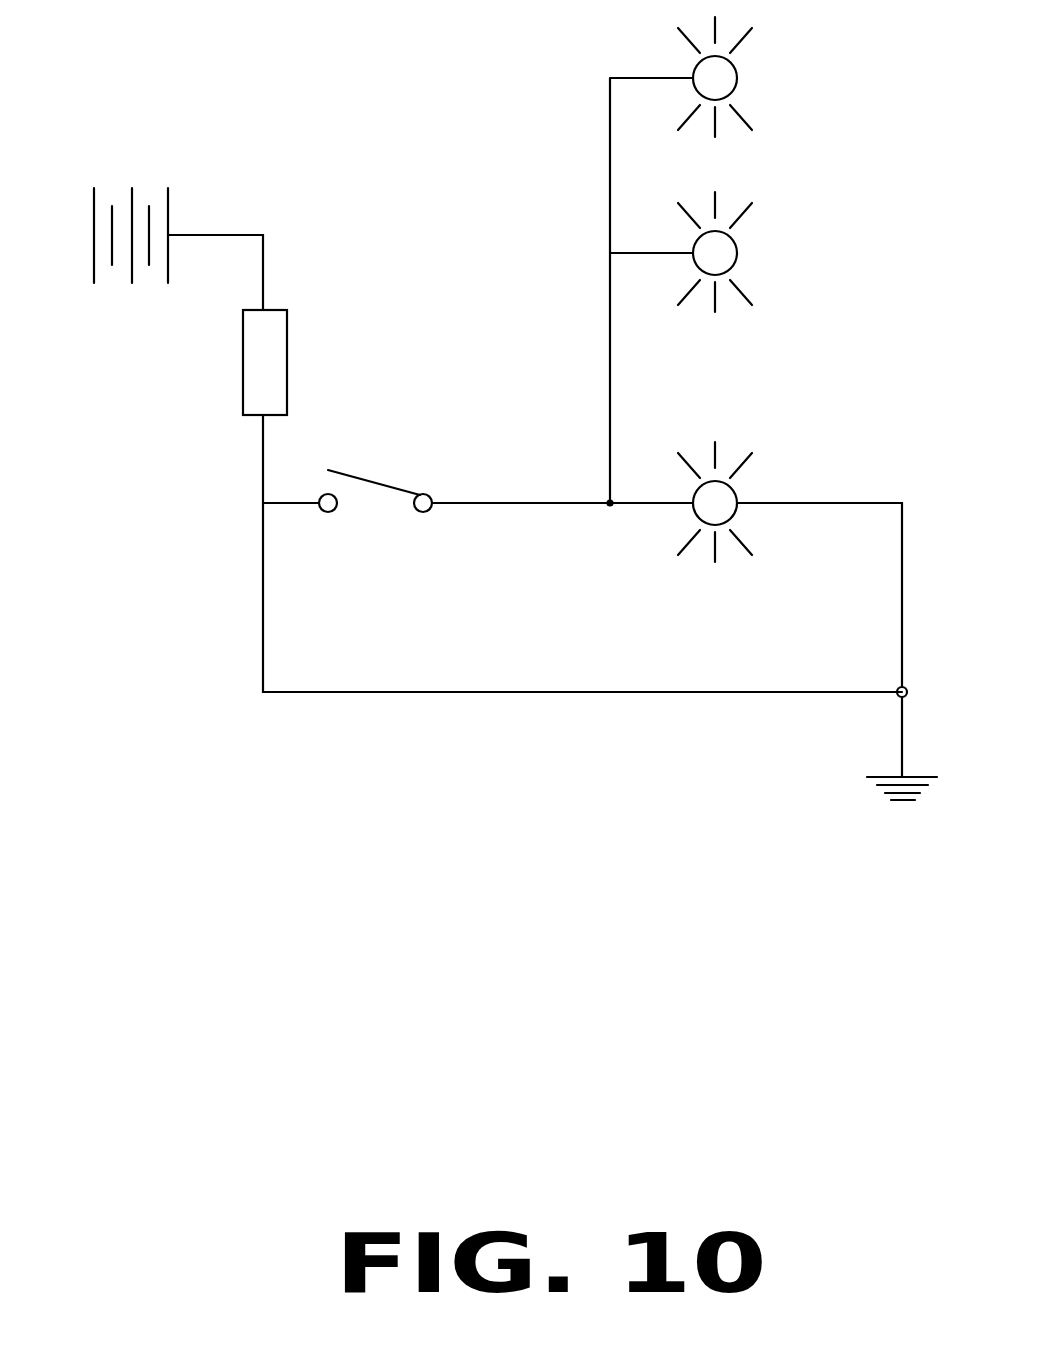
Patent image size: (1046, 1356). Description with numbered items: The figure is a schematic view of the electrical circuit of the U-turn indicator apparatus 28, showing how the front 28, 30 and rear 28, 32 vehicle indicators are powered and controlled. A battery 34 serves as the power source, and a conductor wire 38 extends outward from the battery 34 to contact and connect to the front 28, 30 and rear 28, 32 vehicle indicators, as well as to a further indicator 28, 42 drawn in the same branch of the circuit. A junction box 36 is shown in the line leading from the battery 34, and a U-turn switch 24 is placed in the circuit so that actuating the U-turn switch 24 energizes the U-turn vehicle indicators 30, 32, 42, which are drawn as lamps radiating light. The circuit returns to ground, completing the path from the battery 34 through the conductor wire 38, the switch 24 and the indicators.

The battery 34 is at (93, 240).
The junction box 36 is at (285, 310).
The U-turn switch 24 is at (360, 477).
The U-turn indicator apparatus 28 is at (812, 289).
The vehicle indicator 42 is at (723, 80).
The rear vehicle indicator 32 is at (723, 255).
The front vehicle indicator 30 is at (718, 480).
The conductor wire 38 is at (452, 692).